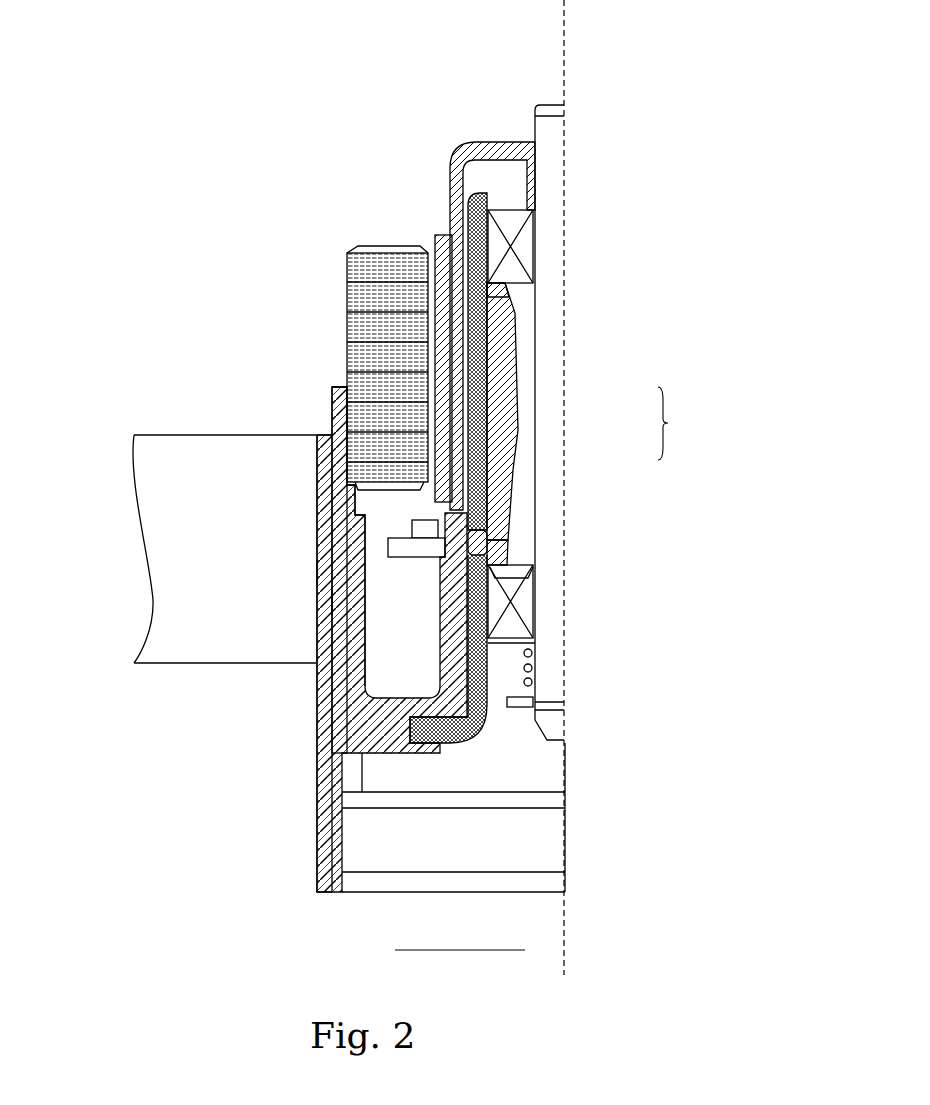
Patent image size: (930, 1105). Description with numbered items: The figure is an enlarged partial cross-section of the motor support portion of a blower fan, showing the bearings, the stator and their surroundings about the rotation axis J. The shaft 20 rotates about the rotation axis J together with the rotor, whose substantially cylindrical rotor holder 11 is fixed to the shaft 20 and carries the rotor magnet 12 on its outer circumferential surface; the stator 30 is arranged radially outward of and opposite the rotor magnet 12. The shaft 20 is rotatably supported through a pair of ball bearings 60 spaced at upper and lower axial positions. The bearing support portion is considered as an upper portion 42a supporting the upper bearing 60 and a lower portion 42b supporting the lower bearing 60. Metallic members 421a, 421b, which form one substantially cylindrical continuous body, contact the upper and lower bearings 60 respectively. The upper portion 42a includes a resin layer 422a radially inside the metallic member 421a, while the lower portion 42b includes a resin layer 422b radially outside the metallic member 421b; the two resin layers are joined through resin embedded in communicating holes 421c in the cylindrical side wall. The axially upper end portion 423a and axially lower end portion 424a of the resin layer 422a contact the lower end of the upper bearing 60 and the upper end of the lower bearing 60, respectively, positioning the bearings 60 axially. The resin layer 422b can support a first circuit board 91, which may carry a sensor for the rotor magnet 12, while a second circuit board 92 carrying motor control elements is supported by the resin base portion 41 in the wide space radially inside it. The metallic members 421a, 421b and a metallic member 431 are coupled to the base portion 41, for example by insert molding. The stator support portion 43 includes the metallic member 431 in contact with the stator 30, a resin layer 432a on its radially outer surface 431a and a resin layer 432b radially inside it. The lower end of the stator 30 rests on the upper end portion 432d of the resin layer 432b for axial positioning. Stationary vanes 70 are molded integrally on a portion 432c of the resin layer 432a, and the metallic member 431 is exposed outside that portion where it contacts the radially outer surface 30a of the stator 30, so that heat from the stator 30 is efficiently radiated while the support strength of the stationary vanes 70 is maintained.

The rotation axis J is at (566, 30).
The rotor holder 11 is at (476, 142).
The rotor magnet 12 is at (447, 235).
The shaft 20 is at (550, 143).
The stator 30 is at (378, 246).
The radially outer surface of the stator 30a is at (385, 489).
The base portion 41 is at (413, 558).
The upper portion of the bearing support portion 42a is at (689, 423).
The metallic member 421a is at (490, 392).
The resin layer 422a is at (517, 463).
The axially upper end portion 423a is at (508, 303).
The communicating holes 421c is at (488, 538).
The axially lower end portion 424a is at (508, 556).
The lower portion of the bearing support portion 42b is at (460, 967).
The metallic member 421b is at (477, 737).
The resin layer 422b is at (448, 722).
The stator support portion 43 is at (48, 462).
The metallic member 431 is at (316, 452).
The radially outer surface of the metallic member 431a is at (327, 605).
The resin layer 432a is at (340, 487).
The resin layer 432b is at (350, 555).
The portion of the resin layer 432c is at (313, 572).
The upper end portion of the resin layer 432d is at (356, 403).
The bearings 60 is at (527, 243).
The stationary vanes 70 is at (163, 602).
The first circuit board 91 is at (535, 643).
The second circuit board 92 is at (553, 800).